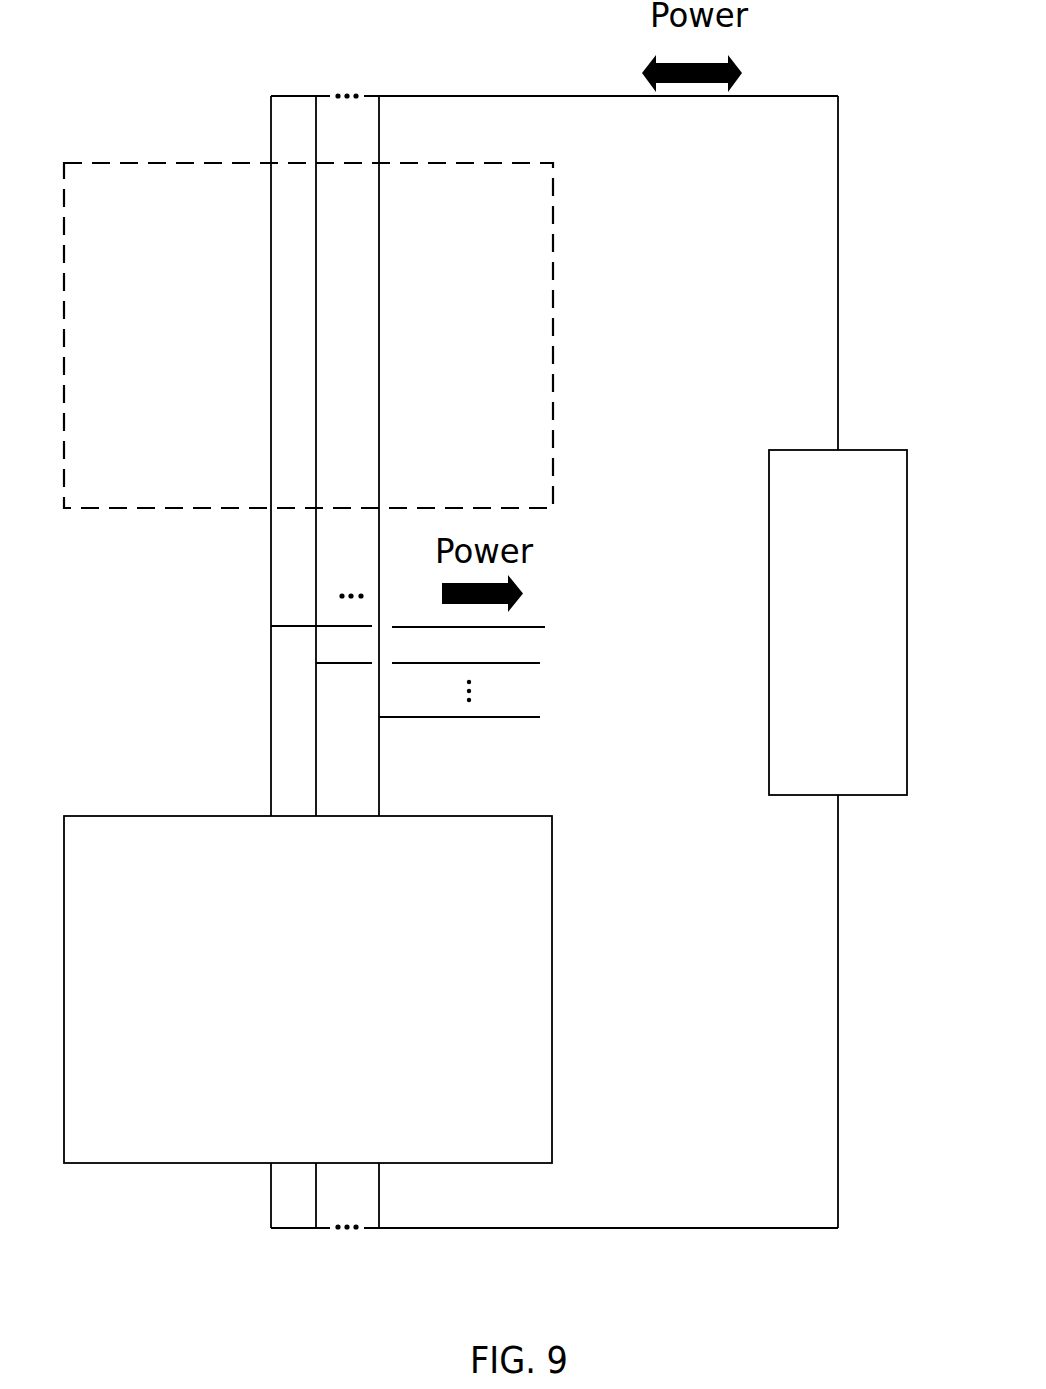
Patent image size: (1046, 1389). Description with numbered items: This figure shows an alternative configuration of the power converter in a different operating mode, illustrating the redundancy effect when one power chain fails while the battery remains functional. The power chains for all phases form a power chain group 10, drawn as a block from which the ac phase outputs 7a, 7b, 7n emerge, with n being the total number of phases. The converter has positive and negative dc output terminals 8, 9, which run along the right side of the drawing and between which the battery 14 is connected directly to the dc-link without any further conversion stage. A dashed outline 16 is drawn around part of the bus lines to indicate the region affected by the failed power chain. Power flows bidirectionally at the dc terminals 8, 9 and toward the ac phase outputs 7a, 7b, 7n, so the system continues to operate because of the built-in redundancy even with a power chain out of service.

The positive dc output terminal 8 is at (619, 249).
The negative dc output terminal 9 is at (628, 1036).
The power chain group 10 is at (308, 967).
The battery 14 is at (857, 593).
The module 16 is at (308, 312).
The ac phase output 7a is at (434, 604).
The ac phase output 7b is at (455, 640).
The ac phase output 7n is at (487, 694).